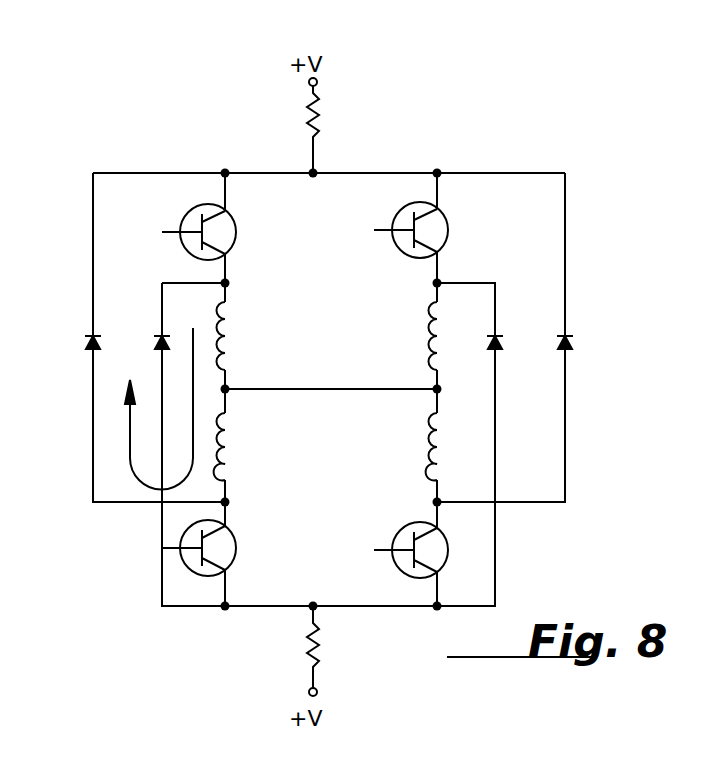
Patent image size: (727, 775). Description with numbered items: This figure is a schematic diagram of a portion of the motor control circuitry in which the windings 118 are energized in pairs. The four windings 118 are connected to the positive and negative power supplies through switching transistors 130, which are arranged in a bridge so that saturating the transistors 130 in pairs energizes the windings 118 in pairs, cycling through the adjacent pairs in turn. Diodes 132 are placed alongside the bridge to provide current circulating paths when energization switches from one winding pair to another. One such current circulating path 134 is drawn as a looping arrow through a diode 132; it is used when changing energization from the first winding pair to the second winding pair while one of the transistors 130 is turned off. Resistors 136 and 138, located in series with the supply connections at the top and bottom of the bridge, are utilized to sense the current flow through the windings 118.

The windings 118 is at (217, 333).
The switching transistors 130 is at (222, 232).
The diodes 132 is at (157, 335).
The current circulating path 134 is at (128, 432).
The resistor 136 is at (320, 120).
The resistor 138 is at (320, 648).